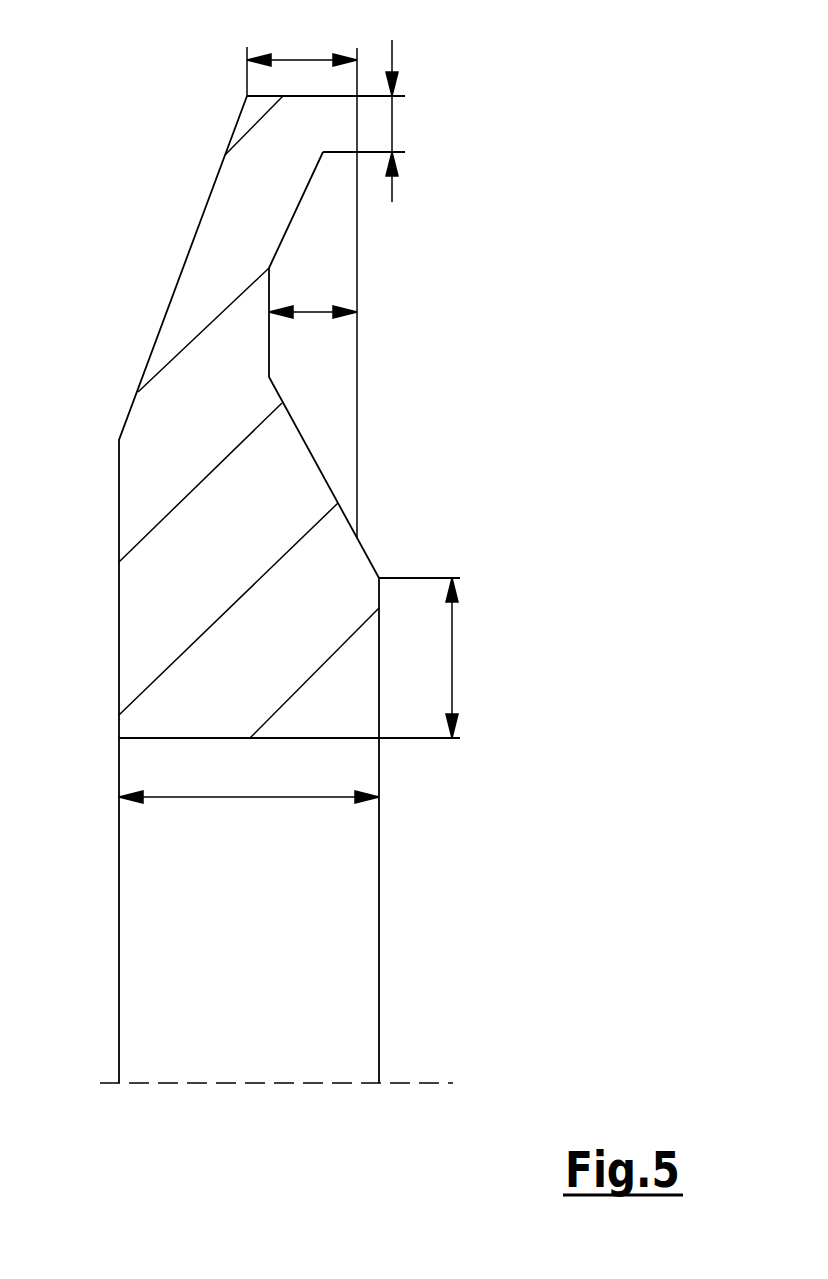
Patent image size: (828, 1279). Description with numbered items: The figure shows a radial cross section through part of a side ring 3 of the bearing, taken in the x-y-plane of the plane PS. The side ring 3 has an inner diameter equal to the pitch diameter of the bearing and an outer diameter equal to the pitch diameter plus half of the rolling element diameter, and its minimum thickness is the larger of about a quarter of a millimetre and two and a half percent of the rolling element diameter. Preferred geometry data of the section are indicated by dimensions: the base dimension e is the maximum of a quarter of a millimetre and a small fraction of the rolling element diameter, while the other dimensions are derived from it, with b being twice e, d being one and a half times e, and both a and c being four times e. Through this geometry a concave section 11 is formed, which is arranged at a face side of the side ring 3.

The side ring 3 is at (213, 287).
The concave section 11 is at (382, 327).
The dimension a is at (249, 777).
The dimension b is at (302, 56).
The dimension c is at (460, 658).
The dimension d is at (313, 295).
The dimension e is at (409, 121).